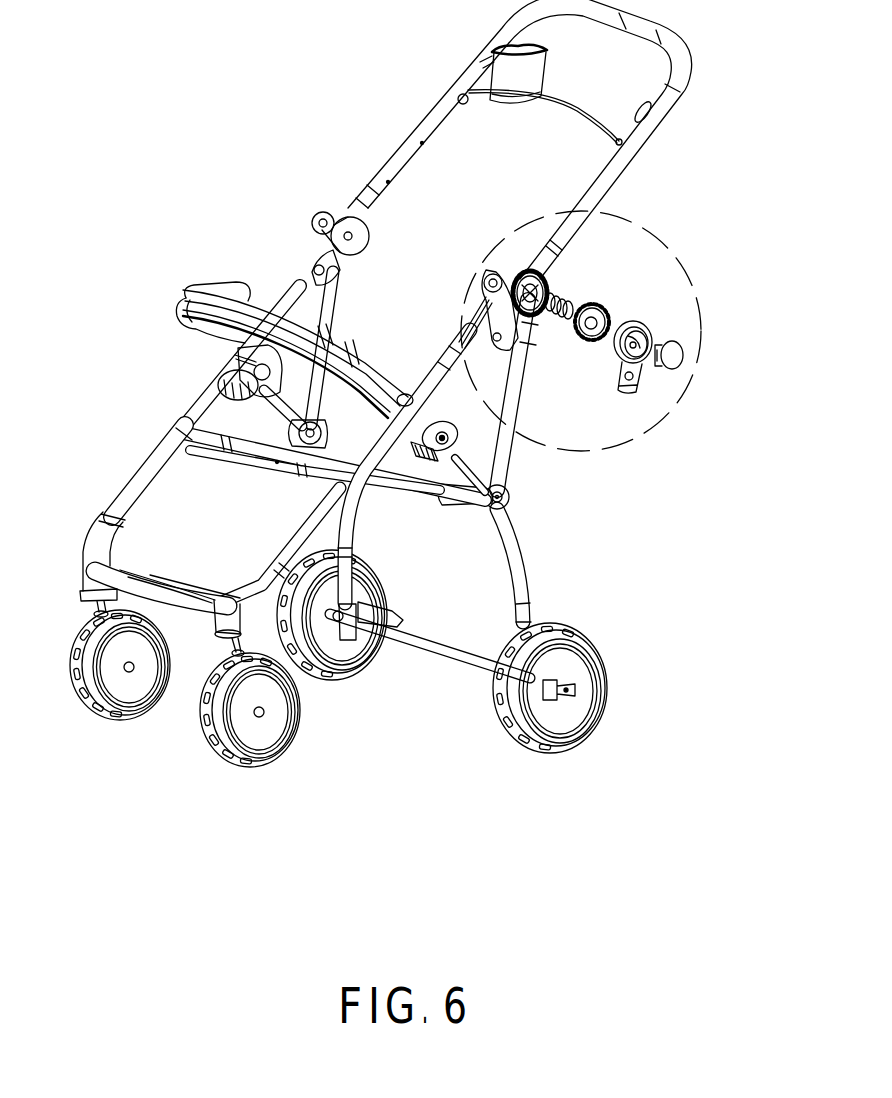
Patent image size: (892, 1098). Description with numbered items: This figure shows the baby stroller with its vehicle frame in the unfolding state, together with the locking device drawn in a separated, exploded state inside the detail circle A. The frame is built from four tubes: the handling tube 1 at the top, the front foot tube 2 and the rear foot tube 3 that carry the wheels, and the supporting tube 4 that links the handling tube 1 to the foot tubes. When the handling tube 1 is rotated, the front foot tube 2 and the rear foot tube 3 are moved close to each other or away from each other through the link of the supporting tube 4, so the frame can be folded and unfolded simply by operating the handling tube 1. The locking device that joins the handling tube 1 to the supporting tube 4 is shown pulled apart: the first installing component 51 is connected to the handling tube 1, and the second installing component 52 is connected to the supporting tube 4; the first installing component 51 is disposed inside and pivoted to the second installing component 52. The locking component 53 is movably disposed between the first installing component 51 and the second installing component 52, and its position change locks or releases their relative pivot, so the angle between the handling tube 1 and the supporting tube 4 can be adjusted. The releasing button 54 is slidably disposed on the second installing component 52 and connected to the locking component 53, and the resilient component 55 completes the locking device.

The handling tube 1 is at (657, 130).
The front foot tube 2 is at (445, 405).
The rear foot tube 3 is at (528, 578).
The supporting tube 4 is at (525, 412).
The first installing component 51 is at (517, 268).
The second installing component 52 is at (647, 328).
The locking component 53 is at (607, 303).
The releasing button 54 is at (677, 360).
The resilient component 55 is at (567, 300).
The detail region A is at (530, 213).